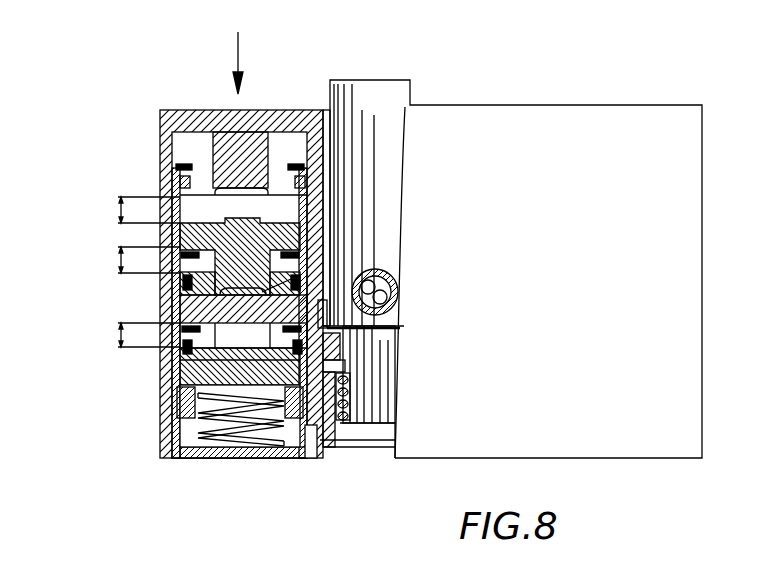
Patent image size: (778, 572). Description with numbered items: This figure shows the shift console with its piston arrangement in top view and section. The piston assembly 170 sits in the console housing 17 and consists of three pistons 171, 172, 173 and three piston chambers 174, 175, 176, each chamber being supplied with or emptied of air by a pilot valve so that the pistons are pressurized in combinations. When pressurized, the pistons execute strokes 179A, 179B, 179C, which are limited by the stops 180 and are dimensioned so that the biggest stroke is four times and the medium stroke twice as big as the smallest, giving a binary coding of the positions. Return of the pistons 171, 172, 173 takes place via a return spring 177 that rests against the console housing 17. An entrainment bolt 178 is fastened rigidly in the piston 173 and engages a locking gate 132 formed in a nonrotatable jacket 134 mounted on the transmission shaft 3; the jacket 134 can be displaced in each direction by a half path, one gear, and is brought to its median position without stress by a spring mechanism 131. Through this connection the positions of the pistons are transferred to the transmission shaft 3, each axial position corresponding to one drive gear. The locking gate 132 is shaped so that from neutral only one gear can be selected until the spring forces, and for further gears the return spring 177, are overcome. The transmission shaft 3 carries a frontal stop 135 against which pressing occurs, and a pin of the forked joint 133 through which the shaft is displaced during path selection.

The transmission shaft 3 is at (397, 95).
The console housing 17 is at (162, 111).
The spring mechanism 131 is at (352, 388).
The locking gate 132 is at (311, 445).
The pin of forked joint 133 is at (398, 282).
The nonrotatable jacket 134 is at (331, 445).
The frontal stop 135 is at (400, 328).
The piston assembly 170 is at (240, 50).
The piston 171 is at (207, 205).
The piston 172 is at (185, 312).
The piston 173 is at (195, 362).
The piston chamber 174 is at (208, 109).
The piston chamber 175 is at (260, 290).
The piston chamber 176 is at (178, 402).
The return spring 177 is at (235, 432).
The entrainment bolt 178 is at (345, 363).
The stroke 179A is at (118, 212).
The stroke 179B is at (118, 260).
The stroke 179C is at (118, 332).
The stops 180 is at (297, 109).